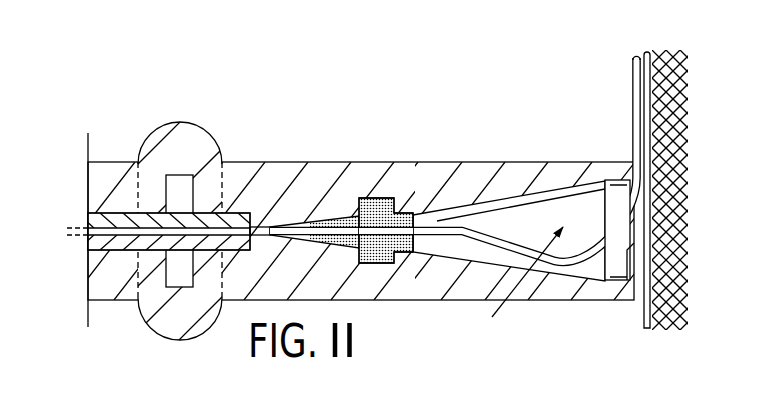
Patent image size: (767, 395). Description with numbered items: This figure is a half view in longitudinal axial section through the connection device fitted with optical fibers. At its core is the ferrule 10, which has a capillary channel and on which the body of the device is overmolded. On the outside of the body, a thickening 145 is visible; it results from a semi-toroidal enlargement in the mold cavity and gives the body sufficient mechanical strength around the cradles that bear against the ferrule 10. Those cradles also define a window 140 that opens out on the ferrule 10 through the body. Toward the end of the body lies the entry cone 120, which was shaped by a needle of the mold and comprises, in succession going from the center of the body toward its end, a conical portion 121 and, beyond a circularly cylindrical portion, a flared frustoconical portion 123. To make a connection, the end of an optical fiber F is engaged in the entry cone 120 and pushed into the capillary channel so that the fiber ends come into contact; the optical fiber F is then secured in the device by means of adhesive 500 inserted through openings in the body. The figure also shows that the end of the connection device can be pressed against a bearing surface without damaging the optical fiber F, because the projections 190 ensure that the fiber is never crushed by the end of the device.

The ferrule 10 is at (94, 242).
The thickening 145 is at (152, 142).
The window 140 is at (185, 183).
The conical portion 121 is at (312, 223).
The adhesive 500 is at (388, 200).
The flared frustoconical portion 123 is at (541, 207).
The entry cone 120 is at (514, 288).
The projection 190 is at (634, 231).
The optical fiber F is at (635, 87).